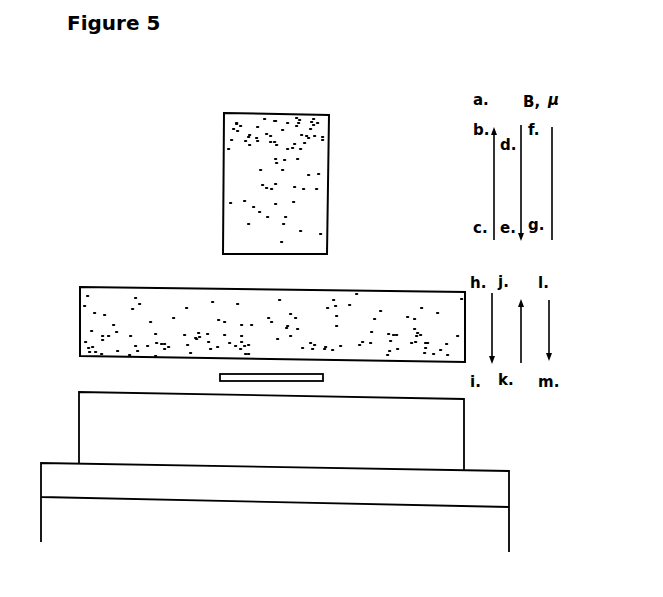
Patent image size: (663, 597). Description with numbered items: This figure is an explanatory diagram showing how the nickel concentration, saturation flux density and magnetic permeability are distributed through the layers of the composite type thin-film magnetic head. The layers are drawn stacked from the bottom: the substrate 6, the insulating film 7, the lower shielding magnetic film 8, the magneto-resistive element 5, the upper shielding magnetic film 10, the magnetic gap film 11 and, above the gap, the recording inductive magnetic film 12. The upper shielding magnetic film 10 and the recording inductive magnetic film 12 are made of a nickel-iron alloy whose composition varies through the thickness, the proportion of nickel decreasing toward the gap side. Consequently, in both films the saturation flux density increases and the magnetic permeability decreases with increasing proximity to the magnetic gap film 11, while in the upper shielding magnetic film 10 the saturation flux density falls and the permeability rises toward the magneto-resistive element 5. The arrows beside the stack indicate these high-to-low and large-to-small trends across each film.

The magneto-resistive element 5 is at (323, 377).
The substrate 6 is at (293, 541).
The insulating film 7 is at (476, 480).
The lower shielding magnetic film 8 is at (452, 437).
The upper shielding magnetic film 10 is at (428, 305).
The magnetic gap film 11 is at (320, 277).
The recording inductive magnetic film 12 is at (318, 178).